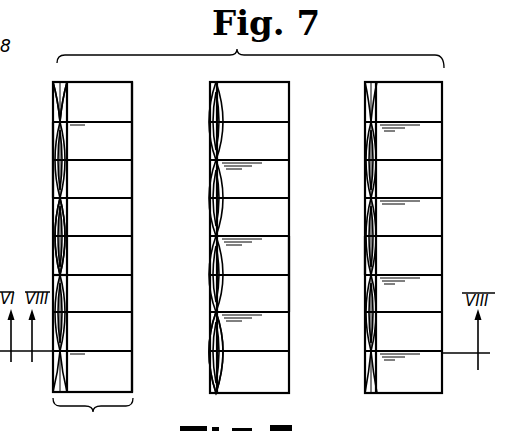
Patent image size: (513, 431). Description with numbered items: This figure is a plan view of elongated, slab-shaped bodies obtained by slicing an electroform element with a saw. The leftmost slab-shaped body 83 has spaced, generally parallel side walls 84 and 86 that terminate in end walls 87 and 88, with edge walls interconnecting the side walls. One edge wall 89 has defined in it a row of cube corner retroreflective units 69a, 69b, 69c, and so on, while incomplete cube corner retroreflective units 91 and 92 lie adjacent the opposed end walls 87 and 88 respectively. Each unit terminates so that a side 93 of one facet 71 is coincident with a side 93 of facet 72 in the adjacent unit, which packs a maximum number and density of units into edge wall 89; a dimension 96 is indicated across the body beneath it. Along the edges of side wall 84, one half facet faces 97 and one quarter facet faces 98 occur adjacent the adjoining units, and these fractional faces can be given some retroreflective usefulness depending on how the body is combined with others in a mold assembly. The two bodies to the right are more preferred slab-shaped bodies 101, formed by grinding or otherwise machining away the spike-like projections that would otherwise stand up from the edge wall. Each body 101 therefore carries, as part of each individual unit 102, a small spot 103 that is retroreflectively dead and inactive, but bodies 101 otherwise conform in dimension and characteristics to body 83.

The cube corner retroreflective unit 69a is at (128, 340).
The cube corner retroreflective unit 69b is at (129, 242).
The cube corner retroreflective unit 69c is at (130, 190).
The facet 71 is at (130, 307).
The facet 72 is at (137, 233).
The slab-shaped body 83 is at (135, 80).
The side wall 84 is at (54, 174).
The side wall 86 is at (134, 172).
The end wall 87 is at (76, 82).
The end wall 88 is at (107, 406).
The edge wall 89 is at (133, 141).
The incomplete cube corner retroreflective unit 91 is at (72, 107).
The incomplete cube corner retroreflective unit 92 is at (126, 376).
The side of facet 93 is at (70, 263).
The width 96 is at (93, 414).
The one half facet face 97 is at (62, 228).
The one quarter facet face 98 is at (54, 136).
The slab-shaped body 101 is at (358, 258).
The unit 102 is at (289, 123).
The small spot 103 is at (210, 352).